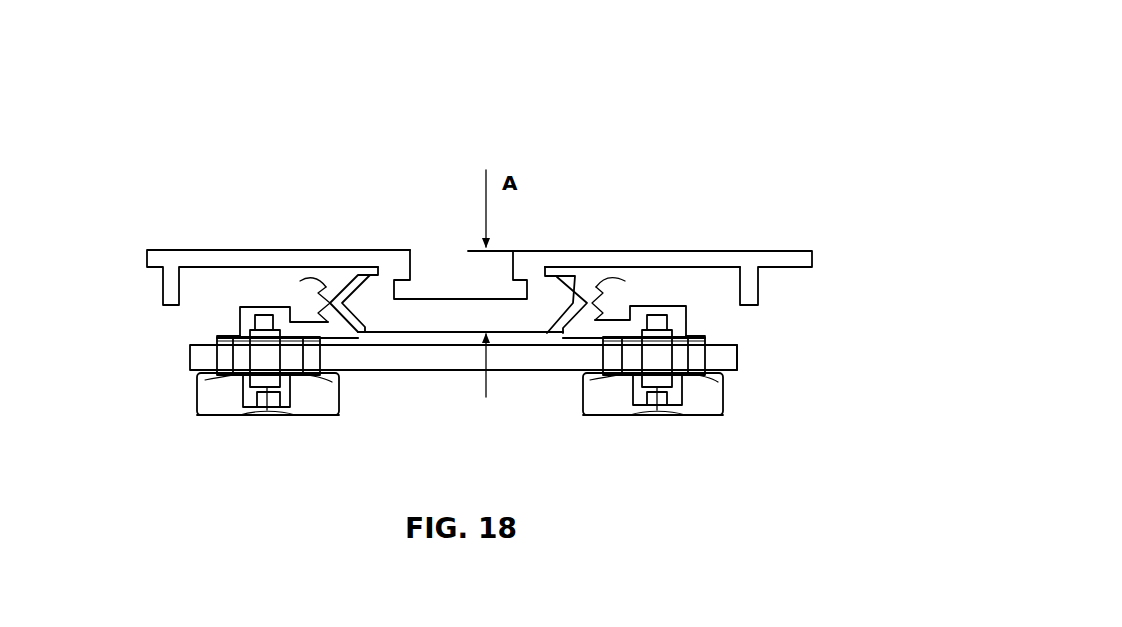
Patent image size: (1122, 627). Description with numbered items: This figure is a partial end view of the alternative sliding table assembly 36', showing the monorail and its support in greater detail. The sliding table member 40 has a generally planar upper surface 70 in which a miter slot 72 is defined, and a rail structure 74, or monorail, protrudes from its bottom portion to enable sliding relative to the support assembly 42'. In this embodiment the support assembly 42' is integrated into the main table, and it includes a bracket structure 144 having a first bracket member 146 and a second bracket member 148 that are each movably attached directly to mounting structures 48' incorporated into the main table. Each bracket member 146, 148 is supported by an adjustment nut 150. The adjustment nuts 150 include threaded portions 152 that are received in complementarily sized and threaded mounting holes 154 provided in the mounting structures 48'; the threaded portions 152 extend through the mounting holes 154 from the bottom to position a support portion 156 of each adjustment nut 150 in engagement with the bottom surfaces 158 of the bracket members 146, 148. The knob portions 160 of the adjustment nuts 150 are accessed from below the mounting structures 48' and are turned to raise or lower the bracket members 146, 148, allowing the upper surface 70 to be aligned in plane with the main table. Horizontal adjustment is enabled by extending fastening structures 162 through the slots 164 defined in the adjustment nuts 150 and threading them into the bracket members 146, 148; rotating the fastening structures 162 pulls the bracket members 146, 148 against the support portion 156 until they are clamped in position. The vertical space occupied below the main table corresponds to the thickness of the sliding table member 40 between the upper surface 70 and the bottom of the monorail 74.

The sliding table assembly 36' is at (481, 180).
The sliding table member 40 is at (208, 223).
The support assembly 42' is at (675, 527).
The mounting structures 48' is at (770, 359).
The upper surface 70 is at (622, 250).
The miter slot 72 is at (440, 265).
The rail structure 74 is at (434, 332).
The bracket structure 144 is at (243, 488).
The first bracket member 146 is at (590, 293).
The second bracket member 148 is at (322, 292).
The adjustment nut 150 is at (200, 415).
The threaded portion 152 is at (218, 350).
The mounting hole 154 is at (303, 350).
The support portion 156 is at (238, 336).
The bottom surface 158 is at (340, 347).
The knob portion 160 is at (303, 415).
The fastening structure 162 is at (248, 415).
The slot 164 is at (292, 362).